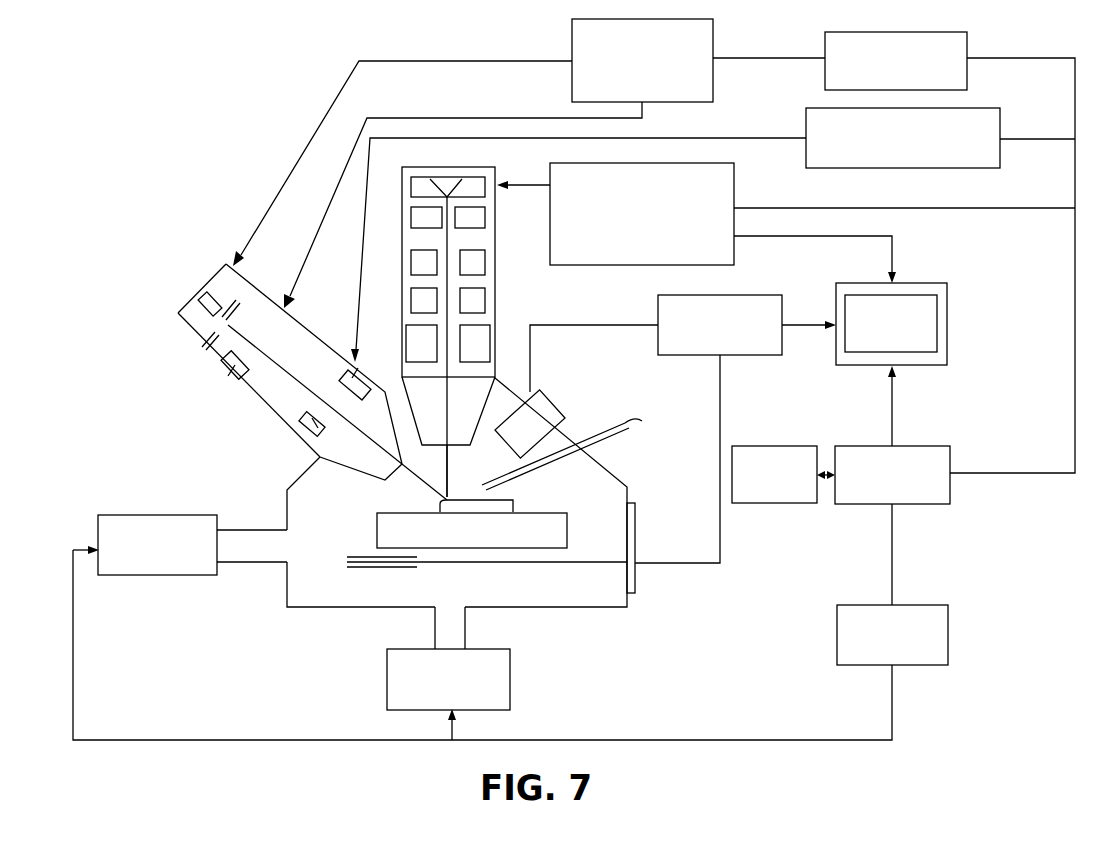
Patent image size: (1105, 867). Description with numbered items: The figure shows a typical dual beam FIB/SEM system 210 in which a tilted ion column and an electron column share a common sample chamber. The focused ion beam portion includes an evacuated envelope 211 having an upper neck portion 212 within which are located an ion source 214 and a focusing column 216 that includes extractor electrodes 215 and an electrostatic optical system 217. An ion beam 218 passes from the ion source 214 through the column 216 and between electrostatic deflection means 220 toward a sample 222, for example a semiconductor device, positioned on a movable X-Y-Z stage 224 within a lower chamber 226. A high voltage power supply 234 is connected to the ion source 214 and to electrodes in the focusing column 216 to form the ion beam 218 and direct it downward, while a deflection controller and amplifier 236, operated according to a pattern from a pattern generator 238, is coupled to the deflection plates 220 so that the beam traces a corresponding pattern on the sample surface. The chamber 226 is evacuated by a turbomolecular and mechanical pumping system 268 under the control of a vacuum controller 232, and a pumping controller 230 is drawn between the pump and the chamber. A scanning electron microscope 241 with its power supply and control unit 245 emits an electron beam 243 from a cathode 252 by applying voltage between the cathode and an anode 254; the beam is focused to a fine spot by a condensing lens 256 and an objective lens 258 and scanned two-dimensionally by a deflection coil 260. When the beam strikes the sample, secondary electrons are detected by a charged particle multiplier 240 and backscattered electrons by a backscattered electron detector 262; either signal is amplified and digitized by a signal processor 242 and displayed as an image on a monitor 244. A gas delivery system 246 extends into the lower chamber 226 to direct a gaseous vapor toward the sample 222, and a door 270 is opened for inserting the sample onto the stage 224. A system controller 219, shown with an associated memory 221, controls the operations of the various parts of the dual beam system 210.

The dual beam FIB/SEM system 210 is at (251, 86).
The evacuated envelope 211 is at (182, 275).
The upper neck portion 212 is at (300, 325).
The ion source 214 is at (186, 318).
The extractor electrodes 215 is at (198, 352).
The focusing column 216 is at (258, 397).
The electrostatic optical system 217 is at (222, 376).
The ion beam 218 is at (385, 470).
The system controller 219 is at (864, 446).
The electrostatic deflection means 220 is at (326, 402).
The memory 221 is at (780, 503).
The sample 222 is at (493, 504).
The movable X-Y-Z stage 224 is at (560, 532).
The lower chamber 226 is at (300, 577).
The pumping controller 230 is at (387, 680).
The vacuum controller 232 is at (948, 632).
The high voltage power supply 234 is at (713, 40).
The deflection controller and amplifier 236 is at (1000, 130).
The pattern generator 238 is at (967, 52).
The charged particle multiplier 240 is at (545, 395).
The scanning electron microscope 241 is at (503, 300).
The signal processor 242 is at (735, 295).
The electron beam 243 is at (452, 470).
The monitor 244 is at (925, 283).
The power supply and control unit 245 is at (734, 198).
The gas delivery system 246 is at (599, 428).
The cathode 252 is at (415, 178).
The anode 254 is at (485, 216).
The condensing lens 256 is at (486, 258).
The objective lens 258 is at (412, 348).
The deflection coil 260 is at (418, 306).
The backscattered electron detector 262 is at (390, 567).
The turbomolecular and mechanical pumping system 268 is at (167, 515).
The door 270 is at (638, 522).